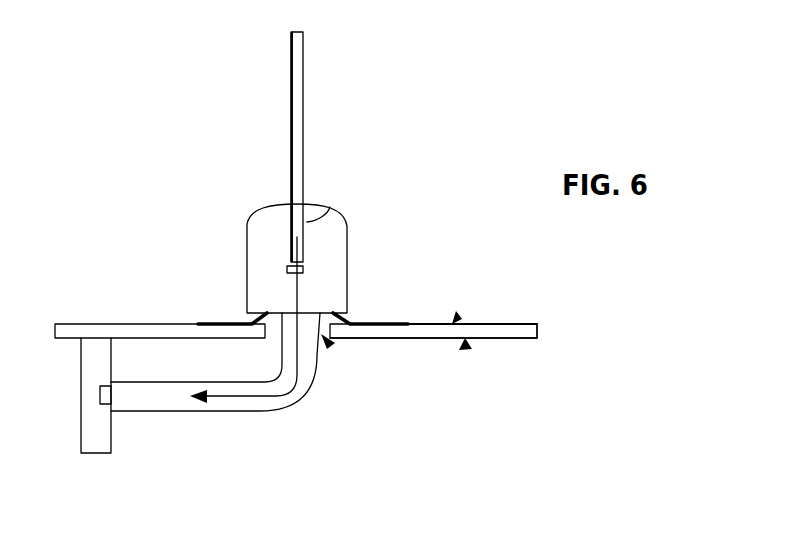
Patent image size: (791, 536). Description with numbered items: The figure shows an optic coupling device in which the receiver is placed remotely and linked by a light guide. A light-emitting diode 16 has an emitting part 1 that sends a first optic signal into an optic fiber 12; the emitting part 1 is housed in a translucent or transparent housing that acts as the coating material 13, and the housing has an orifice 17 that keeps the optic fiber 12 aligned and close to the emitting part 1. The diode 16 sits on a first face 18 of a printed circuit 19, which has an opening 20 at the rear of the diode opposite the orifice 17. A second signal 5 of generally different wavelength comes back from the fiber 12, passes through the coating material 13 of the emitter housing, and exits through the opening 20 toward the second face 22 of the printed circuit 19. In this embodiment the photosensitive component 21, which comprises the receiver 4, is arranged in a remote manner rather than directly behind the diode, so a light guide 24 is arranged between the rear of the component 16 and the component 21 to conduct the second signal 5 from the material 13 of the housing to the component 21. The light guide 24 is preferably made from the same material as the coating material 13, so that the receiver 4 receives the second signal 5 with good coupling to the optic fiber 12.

The emitter 1 is at (303, 272).
The receiver 4 is at (100, 393).
The second signal 5 is at (298, 304).
The optic fiber 12 is at (295, 136).
The coating material 13 is at (338, 290).
The light-emitting diode 16 is at (247, 235).
The orifice 17 is at (330, 207).
The first face 18 is at (457, 316).
The printed circuit 19 is at (527, 334).
The opening 20 is at (331, 346).
The photosensitive component 21 is at (103, 445).
The second face 22 is at (467, 348).
The light guide 24 is at (313, 383).